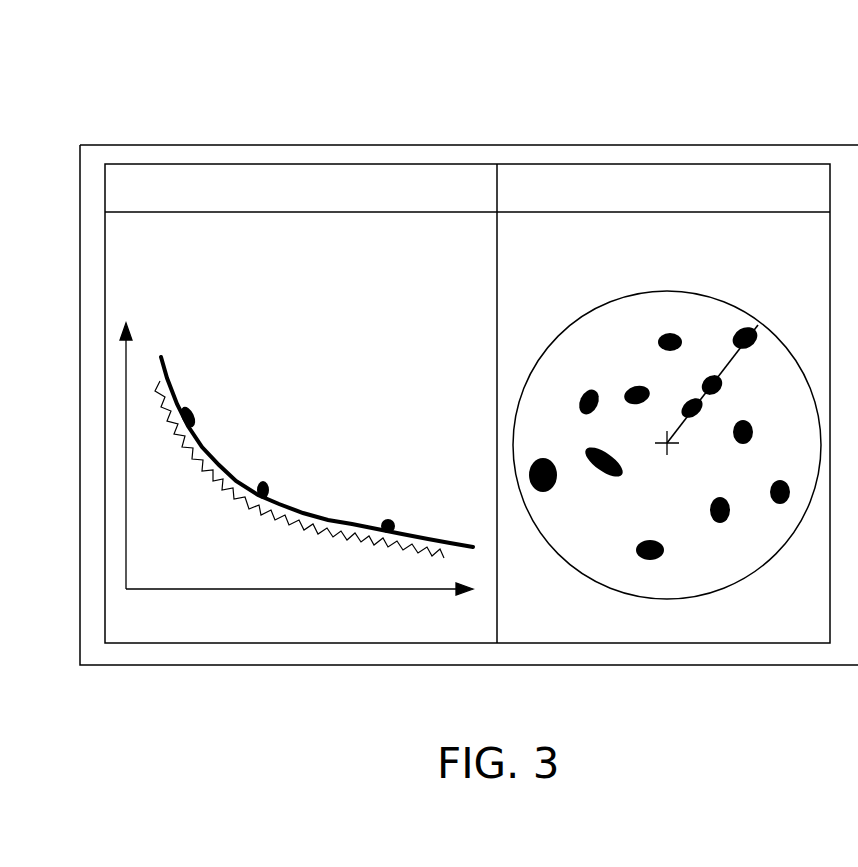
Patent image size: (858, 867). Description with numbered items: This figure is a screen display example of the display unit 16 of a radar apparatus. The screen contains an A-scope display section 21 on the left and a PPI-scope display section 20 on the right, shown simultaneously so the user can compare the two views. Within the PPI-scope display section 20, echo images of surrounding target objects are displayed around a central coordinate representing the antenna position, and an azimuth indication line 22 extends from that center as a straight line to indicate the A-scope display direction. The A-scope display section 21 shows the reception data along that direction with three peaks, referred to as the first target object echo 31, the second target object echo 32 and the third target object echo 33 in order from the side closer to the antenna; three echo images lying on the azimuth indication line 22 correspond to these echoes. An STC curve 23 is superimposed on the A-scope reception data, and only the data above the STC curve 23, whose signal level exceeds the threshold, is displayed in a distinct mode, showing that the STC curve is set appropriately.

The display unit 16 is at (112, 117).
The PPI-scope display section 20 is at (764, 605).
The A-scope display section 21 is at (247, 612).
The azimuth indication line 22 is at (735, 355).
The STC curve 23 is at (458, 544).
The first target object echo 31 is at (195, 405).
The second target object echo 32 is at (263, 478).
The third target object echo 33 is at (390, 516).